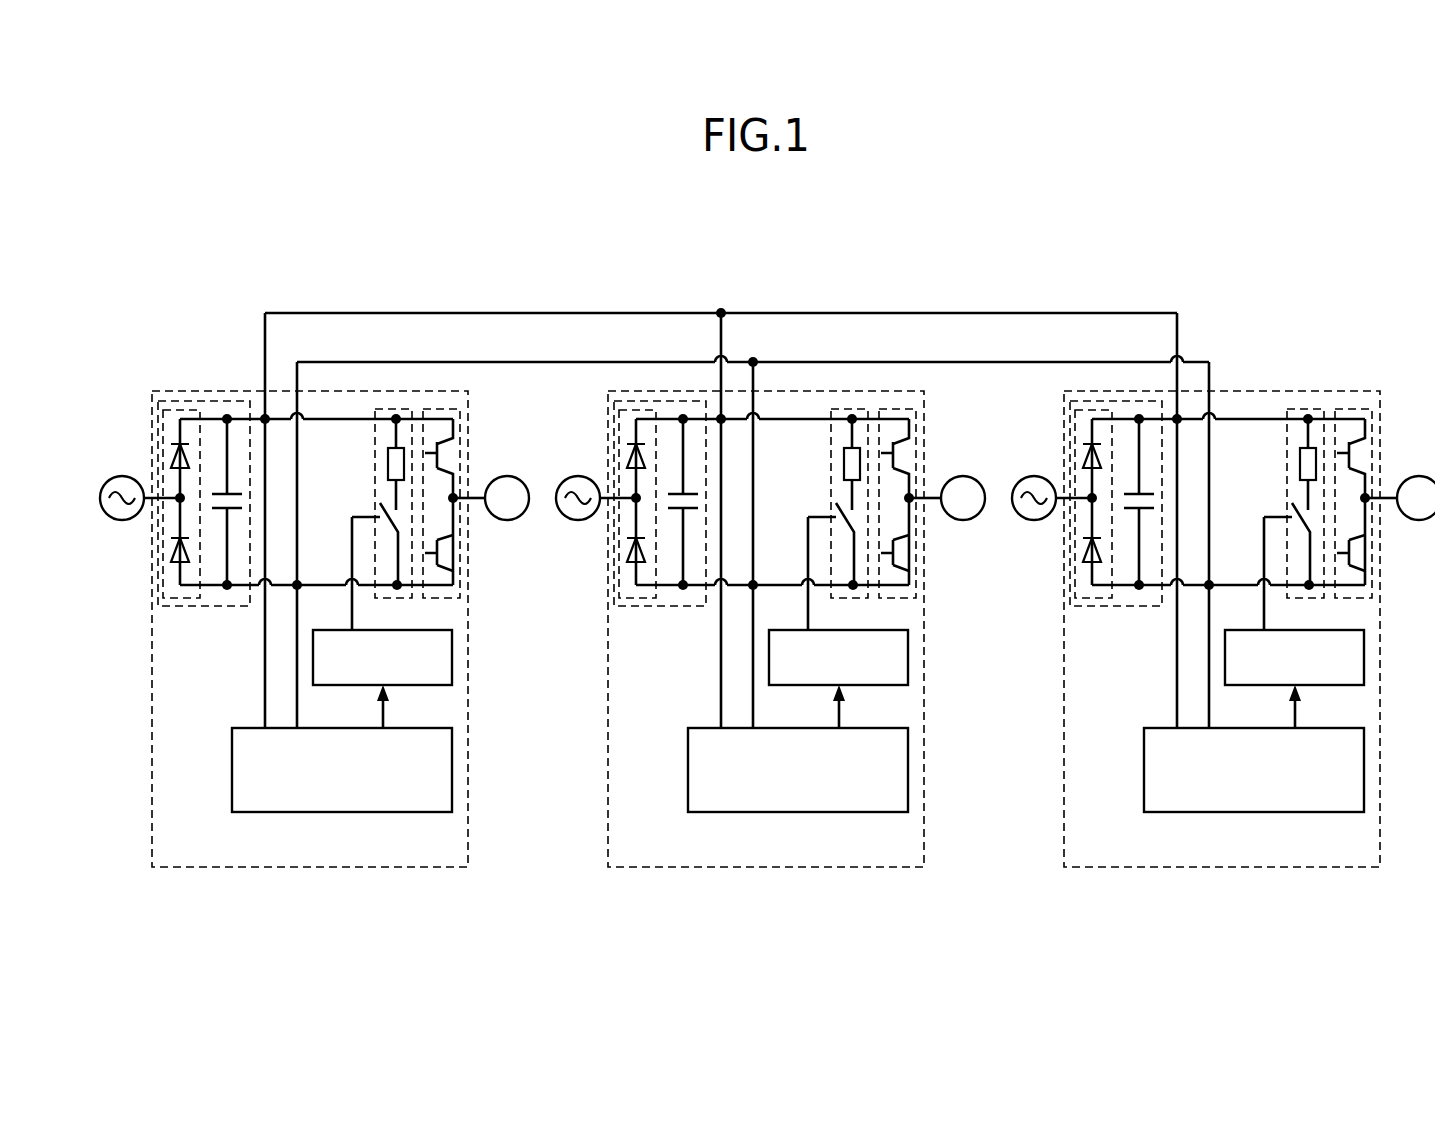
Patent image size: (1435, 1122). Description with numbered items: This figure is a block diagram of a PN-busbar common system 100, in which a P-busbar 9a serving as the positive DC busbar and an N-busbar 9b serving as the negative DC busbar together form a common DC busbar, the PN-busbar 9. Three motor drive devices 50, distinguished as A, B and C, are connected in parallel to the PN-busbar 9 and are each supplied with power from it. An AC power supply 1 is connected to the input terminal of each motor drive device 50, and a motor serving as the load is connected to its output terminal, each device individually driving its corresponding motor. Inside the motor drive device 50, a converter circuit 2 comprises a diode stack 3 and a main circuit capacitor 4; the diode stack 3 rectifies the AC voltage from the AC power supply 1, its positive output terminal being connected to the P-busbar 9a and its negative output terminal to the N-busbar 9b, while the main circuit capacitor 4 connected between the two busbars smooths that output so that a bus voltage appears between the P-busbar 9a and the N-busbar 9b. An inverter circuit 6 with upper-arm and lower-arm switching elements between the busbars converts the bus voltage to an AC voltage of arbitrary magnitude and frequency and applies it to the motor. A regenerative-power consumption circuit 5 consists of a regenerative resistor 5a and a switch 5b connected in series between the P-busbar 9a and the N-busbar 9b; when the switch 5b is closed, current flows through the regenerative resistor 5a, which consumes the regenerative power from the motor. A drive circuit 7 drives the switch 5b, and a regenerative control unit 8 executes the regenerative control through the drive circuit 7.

The AC power supply 1 is at (122, 476).
The converter circuit 2 is at (195, 400).
The diode stack 3 is at (163, 568).
The main circuit capacitor 4 is at (217, 512).
The regenerative-power consumption circuit 5 is at (393, 409).
The regenerative resistor 5a is at (388, 463).
The switch 5b is at (380, 507).
The inverter circuit 6 is at (460, 455).
The drive circuit 7 is at (455, 658).
The regenerative control unit 8 is at (248, 728).
The PN-busbar 9 is at (432, 262).
The P-busbar 9a is at (357, 313).
The N-busbar 9b is at (415, 362).
The motor drive device 50 is at (312, 868).
The PN-busbar common system 100 is at (722, 228).